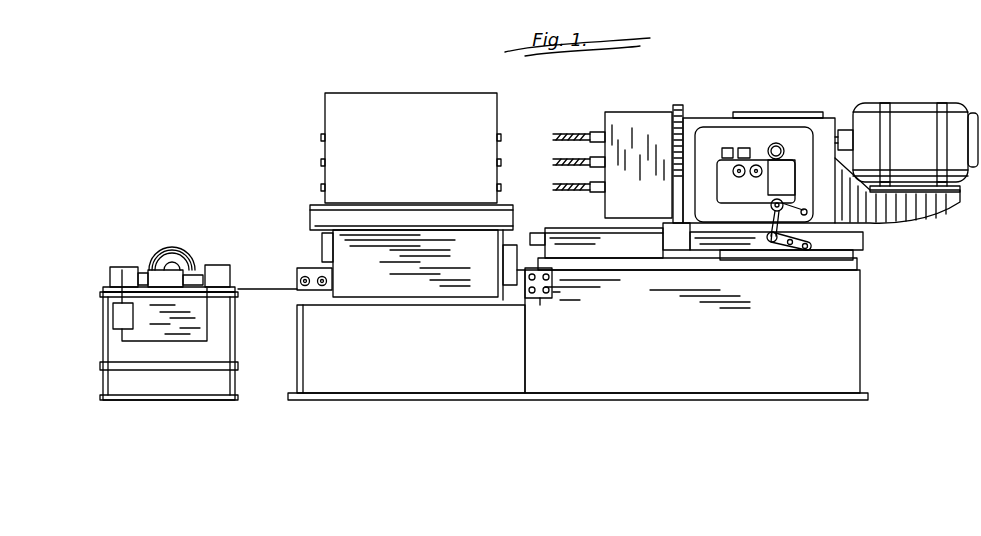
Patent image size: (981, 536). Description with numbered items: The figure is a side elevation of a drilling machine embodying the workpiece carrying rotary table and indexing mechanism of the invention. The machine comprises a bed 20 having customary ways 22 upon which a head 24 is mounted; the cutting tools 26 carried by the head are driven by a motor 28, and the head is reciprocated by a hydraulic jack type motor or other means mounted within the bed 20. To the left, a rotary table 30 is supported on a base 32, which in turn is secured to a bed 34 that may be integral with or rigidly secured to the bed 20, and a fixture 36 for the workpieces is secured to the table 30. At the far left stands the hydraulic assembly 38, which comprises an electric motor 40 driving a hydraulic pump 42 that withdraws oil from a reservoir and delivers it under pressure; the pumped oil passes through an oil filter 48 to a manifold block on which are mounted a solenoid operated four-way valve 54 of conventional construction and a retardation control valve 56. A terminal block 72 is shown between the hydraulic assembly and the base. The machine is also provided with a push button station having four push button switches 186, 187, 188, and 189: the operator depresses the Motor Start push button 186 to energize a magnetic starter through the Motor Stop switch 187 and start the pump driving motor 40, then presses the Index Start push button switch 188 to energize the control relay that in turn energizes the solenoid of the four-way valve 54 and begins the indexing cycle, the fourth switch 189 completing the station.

The bed 20 is at (648, 382).
The ways 22 is at (645, 236).
The head 24 is at (822, 117).
The cutting tools 26 is at (565, 132).
The motor 28 is at (906, 110).
The rotary table 30 is at (323, 222).
The base 32 is at (410, 282).
The bed 34 is at (475, 385).
The fixture 36 is at (452, 102).
The hydraulic assembly 38 is at (185, 232).
The electric motor 40 is at (140, 266).
The hydraulic pump 42 is at (172, 262).
The oil filter 48 is at (113, 323).
The solenoid operated four-way valve 54 is at (228, 265).
The retardation control valve 56 is at (162, 259).
The terminal block 72 is at (298, 278).
The Motor Start push button switch 186 is at (526, 284).
The Motor Stop push button switch 187 is at (540, 298).
The Index Start push button switch 188 is at (552, 281).
The push button switch 189 is at (553, 293).